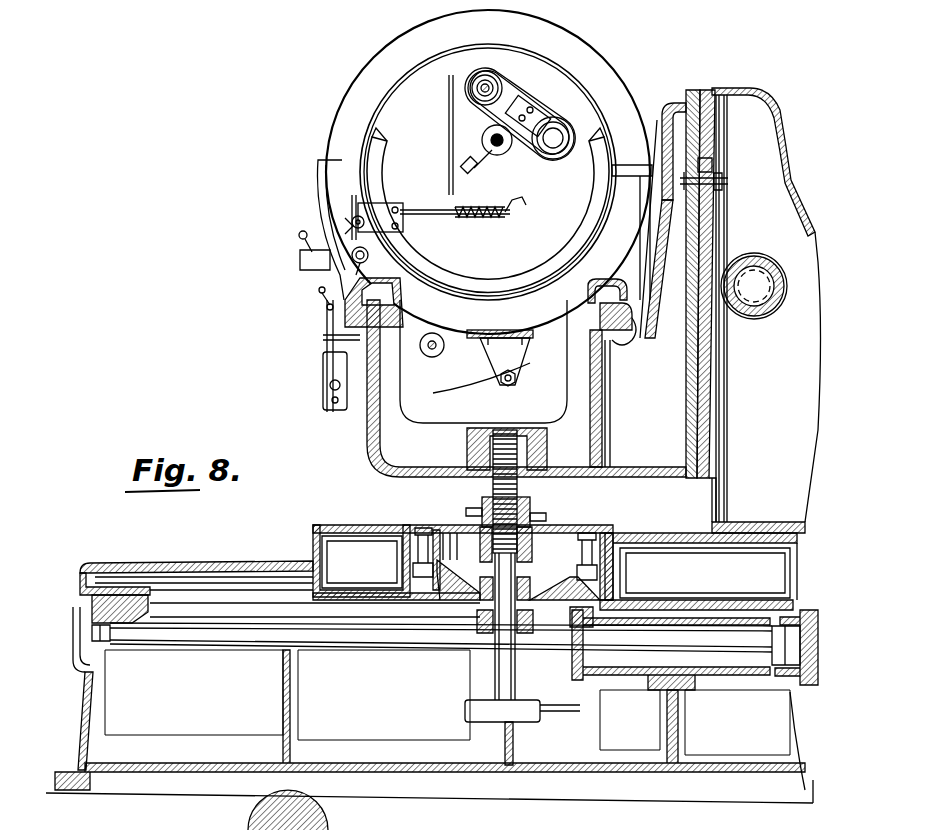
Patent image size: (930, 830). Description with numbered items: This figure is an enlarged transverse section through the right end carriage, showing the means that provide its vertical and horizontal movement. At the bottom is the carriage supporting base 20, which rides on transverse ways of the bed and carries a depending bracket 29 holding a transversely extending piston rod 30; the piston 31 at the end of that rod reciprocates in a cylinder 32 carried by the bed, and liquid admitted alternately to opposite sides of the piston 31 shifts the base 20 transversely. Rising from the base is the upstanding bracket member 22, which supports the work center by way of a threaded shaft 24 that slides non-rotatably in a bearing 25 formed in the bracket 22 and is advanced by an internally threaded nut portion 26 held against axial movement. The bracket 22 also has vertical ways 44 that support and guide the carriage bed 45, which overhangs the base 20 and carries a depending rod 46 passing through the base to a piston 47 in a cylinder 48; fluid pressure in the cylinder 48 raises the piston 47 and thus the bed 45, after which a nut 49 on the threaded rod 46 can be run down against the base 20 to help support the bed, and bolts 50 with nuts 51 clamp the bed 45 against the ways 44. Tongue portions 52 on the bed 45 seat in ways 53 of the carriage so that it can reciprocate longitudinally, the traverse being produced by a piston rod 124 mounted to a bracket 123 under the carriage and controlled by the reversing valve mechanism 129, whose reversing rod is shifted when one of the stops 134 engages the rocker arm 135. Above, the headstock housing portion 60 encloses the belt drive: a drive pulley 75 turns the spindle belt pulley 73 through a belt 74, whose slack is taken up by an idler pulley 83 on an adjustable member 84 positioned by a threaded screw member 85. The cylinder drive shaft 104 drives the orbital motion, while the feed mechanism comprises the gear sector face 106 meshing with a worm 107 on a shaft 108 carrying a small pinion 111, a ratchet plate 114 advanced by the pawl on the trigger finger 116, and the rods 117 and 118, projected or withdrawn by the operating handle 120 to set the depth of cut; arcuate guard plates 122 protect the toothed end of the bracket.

The carriage supporting base 20 is at (175, 564).
The upstanding bracket member 22 is at (778, 118).
The threaded shaft 24 is at (752, 318).
The bearing 25 is at (762, 264).
The internally threaded nut portion 26 is at (742, 340).
The depending bracket 29 is at (90, 600).
The piston rod 30 is at (232, 652).
The piston 31 is at (795, 690).
The cylinder 32 is at (742, 668).
The vertical ways 44 is at (710, 420).
The carriage bed 45 is at (640, 480).
The depending rod 46 is at (518, 570).
The piston 47 is at (485, 625).
The cylinder 48 is at (545, 707).
The nut 49 is at (532, 507).
The bolts 50 is at (722, 200).
The nuts 51 is at (722, 172).
The tongue portions 52 is at (620, 345).
The ways 53 is at (328, 320).
The housing portion 60 is at (358, 84).
The belt pulley 73 is at (560, 125).
The belt 74 is at (530, 96).
The drive pulley 75 is at (470, 84).
The idler pulley 83 is at (482, 138).
The adjustable member 84 is at (540, 112).
The threaded screw member 85 is at (466, 162).
The cylinder drive shaft 104 is at (432, 340).
The gear sector face 106 is at (515, 205).
The worm 107 is at (482, 216).
The shaft 108 is at (430, 228).
The small pinion 111 is at (355, 205).
The ratchet plate 114 is at (345, 226).
The trigger finger 116 is at (352, 216).
The rod 117 is at (352, 256).
The rod 118 is at (350, 266).
The operating handle 120 is at (299, 237).
The arcuate guard plates 122 is at (378, 136).
The bracket 123 is at (500, 330).
The piston rod 124 is at (505, 386).
The reversing valve mechanism 129 is at (325, 410).
The stops 134 is at (320, 292).
The rocker arm 135 is at (328, 308).